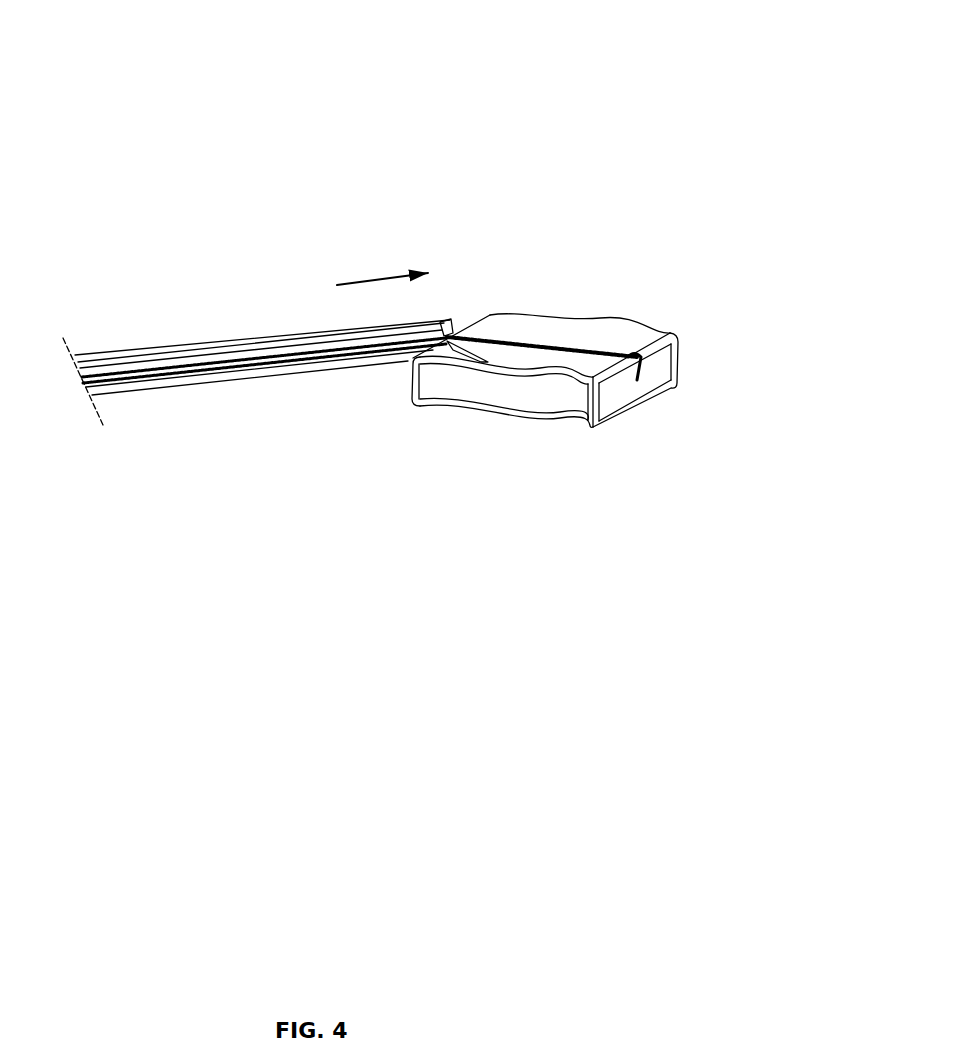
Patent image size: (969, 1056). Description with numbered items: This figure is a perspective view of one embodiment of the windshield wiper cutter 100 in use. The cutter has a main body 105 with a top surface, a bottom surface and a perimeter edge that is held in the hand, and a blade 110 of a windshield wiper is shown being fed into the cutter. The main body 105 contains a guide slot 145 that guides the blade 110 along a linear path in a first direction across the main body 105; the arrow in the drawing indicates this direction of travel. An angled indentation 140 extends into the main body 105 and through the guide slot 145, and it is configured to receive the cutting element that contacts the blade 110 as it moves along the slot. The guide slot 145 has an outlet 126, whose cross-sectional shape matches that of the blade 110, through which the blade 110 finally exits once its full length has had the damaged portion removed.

The windshield wiper cutter 100 is at (543, 79).
The main body 105 is at (524, 399).
The blade 110 is at (125, 344).
The outlet 126 is at (645, 372).
The angled indentation 140 is at (466, 362).
The guide slot 145 is at (547, 338).